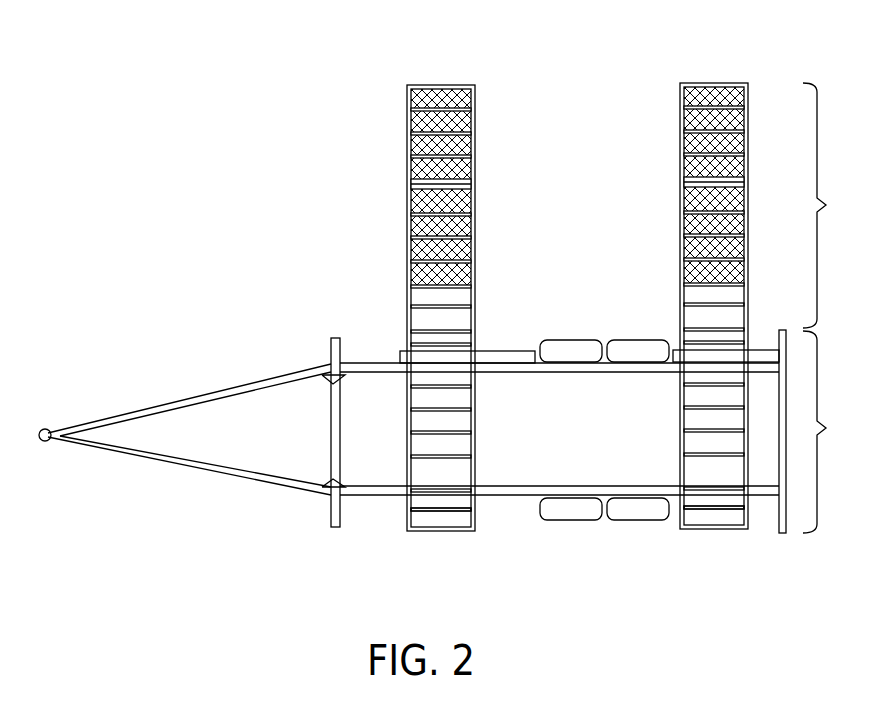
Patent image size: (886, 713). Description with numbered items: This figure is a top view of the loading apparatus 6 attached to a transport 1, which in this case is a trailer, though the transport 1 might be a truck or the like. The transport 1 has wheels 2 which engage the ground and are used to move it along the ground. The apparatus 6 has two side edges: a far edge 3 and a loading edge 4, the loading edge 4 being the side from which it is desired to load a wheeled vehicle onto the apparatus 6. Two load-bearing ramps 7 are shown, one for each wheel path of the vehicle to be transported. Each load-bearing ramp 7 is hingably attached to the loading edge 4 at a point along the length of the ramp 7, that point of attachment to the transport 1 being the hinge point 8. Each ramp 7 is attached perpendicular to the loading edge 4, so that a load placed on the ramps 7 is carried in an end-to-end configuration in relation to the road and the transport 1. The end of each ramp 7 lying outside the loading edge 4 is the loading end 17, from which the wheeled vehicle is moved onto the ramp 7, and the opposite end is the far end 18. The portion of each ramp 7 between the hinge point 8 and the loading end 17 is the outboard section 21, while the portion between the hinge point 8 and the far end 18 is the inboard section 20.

The transport 1 is at (193, 392).
The wheels 2 is at (570, 528).
The far edge 3 is at (376, 512).
The loading edge 4 is at (388, 356).
The apparatus 6 is at (343, 237).
The load-bearing ramp 7 is at (385, 81).
The hinge point 8 is at (480, 352).
The loading end 17 is at (440, 84).
The far end 18 is at (440, 532).
The inboard section 20 is at (837, 432).
The outboard section 21 is at (835, 205).